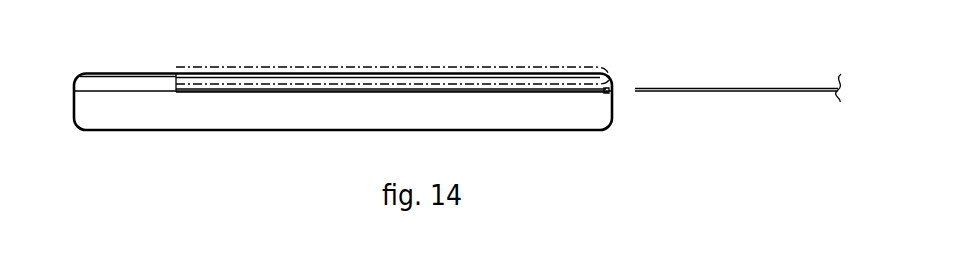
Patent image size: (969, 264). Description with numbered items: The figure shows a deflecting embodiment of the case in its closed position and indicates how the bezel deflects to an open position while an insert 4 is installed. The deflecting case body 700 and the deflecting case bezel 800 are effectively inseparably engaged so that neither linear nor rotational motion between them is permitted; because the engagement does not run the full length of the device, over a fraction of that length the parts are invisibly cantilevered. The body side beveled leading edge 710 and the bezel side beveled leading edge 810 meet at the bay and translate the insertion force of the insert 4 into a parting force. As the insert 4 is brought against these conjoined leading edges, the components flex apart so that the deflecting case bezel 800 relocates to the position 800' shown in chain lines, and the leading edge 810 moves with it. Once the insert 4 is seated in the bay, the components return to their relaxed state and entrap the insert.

The deflecting case body 700 is at (87, 133).
The body side beveled leading edge 710 is at (603, 97).
The deflecting case bezel 800 is at (388, 54).
The deflected position of deflecting case bezel 800' is at (392, 53).
The bezel side beveled leading edge 810 is at (603, 75).
The card 4 is at (655, 88).